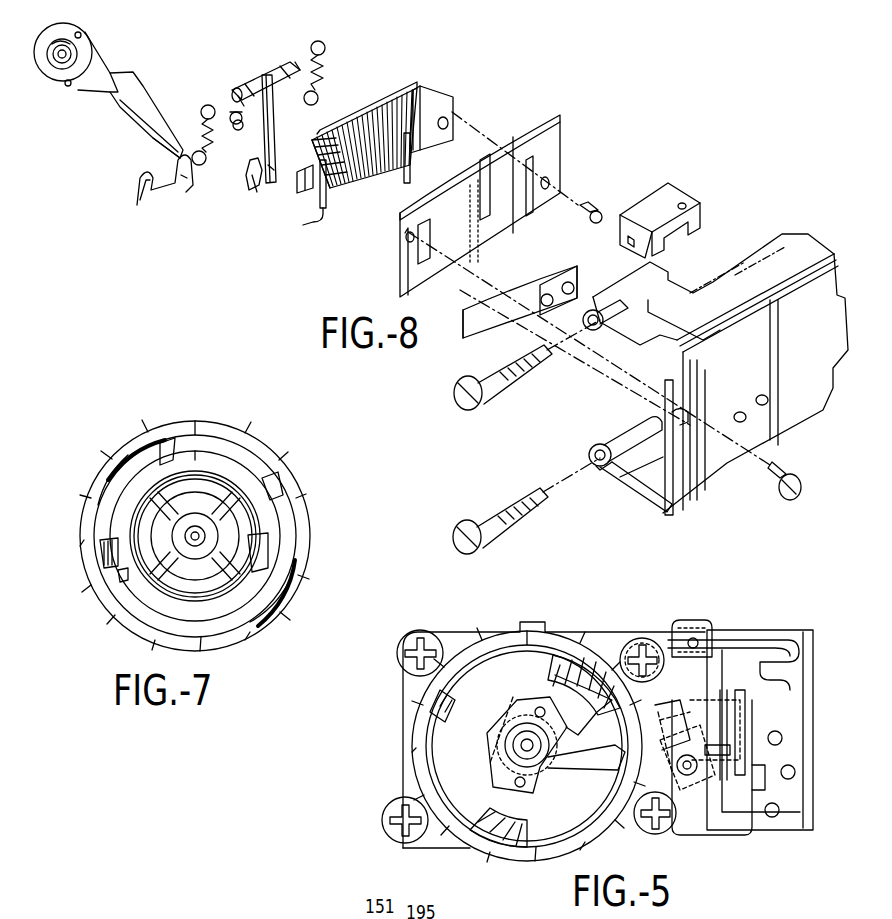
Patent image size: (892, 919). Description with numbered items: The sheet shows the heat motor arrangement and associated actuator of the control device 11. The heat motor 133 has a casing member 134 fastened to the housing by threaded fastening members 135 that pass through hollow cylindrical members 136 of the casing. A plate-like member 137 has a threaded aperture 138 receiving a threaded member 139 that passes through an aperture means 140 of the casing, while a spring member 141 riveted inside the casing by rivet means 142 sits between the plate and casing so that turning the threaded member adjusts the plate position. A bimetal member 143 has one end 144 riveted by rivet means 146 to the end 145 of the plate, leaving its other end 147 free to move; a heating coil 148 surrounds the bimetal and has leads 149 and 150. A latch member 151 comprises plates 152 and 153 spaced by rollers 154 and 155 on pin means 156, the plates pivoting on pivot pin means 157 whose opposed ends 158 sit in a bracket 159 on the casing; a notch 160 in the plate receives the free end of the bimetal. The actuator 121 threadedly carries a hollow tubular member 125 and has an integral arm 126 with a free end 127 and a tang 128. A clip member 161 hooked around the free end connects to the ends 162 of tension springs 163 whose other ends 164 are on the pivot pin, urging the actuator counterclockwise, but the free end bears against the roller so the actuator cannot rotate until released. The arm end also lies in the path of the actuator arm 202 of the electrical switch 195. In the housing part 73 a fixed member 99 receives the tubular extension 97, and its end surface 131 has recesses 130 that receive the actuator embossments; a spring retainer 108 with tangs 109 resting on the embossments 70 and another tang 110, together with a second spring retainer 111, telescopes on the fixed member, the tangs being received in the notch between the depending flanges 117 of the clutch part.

In FIG. 5, the control device 11 is at (400, 698).
In FIG. 5, the embossments 70 is at (565, 655).
In FIG. 7, the housing part 73 is at (203, 421).
In FIG. 5, the housing part 73 is at (490, 855).
In FIG. 7, the tubular extension 97 is at (175, 538).
In FIG. 7, the fixed member 99 is at (240, 548).
In FIG. 7, the spring retainer 108 is at (215, 470).
In FIG. 7, the tangs 109 is at (110, 480).
In FIG. 7, the tang 110 is at (278, 488).
In FIG. 7, the spring retainer 111 is at (140, 606).
In FIG. 7, the depending flanges 117 is at (243, 469).
In FIG. 5, the actuator 121 is at (525, 712).
In FIG. 8, the hollow tubular member 125 is at (65, 75).
In FIG. 8, the arm 126 is at (152, 129).
In FIG. 5, the arm 126 is at (612, 772).
In FIG. 8, the free end 127 is at (183, 154).
In FIG. 5, the free end 127 is at (683, 786).
In FIG. 5, the tang 128 is at (590, 688).
In FIG. 7, the recesses 130 is at (170, 520).
In FIG. 7, the end surface 131 is at (225, 525).
In FIG. 8, the heat motor 133 is at (550, 96).
In FIG. 5, the heat motor 133 is at (805, 626).
In FIG. 8, the casing member 134 is at (793, 283).
In FIG. 8, the threaded fastening members 135 is at (500, 392).
In FIG. 8, the hollow cylindrical members 136 is at (606, 326).
In FIG. 8, the plate-like member 137 is at (487, 167).
In FIG. 5, the plate-like member 137 is at (745, 727).
In FIG. 8, the threaded aperture 138 is at (406, 240).
In FIG. 8, the threaded member 139 is at (772, 481).
In FIG. 8, the aperture means 140 is at (684, 418).
In FIG. 8, the spring member 141 is at (503, 318).
In FIG. 8, the rivet means 142 is at (546, 294).
In FIG. 8, the bimetal member 143 is at (417, 110).
In FIG. 5, the bimetal member 143 is at (748, 772).
In FIG. 8, the end 144 is at (457, 116).
In FIG. 8, the end 145 is at (562, 148).
In FIG. 8, the rivet means 146 is at (595, 208).
In FIG. 8, the other end 147 is at (292, 180).
In FIG. 5, the other end 147 is at (730, 750).
In FIG. 8, the heating coil 148 is at (378, 105).
In FIG. 8, the lead 149 is at (404, 180).
In FIG. 8, the lead 150 is at (315, 225).
In FIG. 8, the latch member 151 is at (230, 198).
In FIG. 5, the latch member 151 is at (694, 630).
In FIG. 8, the plate 152 is at (257, 121).
In FIG. 8, the plate 153 is at (268, 98).
In FIG. 8, the roller 154 is at (262, 192).
In FIG. 5, the roller 154 is at (682, 791).
In FIG. 8, the roller 155 is at (228, 110).
In FIG. 8, the pin means 156 is at (236, 140).
In FIG. 8, the pivot pin means 157 is at (262, 62).
In FIG. 8, the opposed ends 158 is at (241, 100).
In FIG. 8, the bracket 159 is at (667, 203).
In FIG. 8, the notch 160 is at (276, 168).
In FIG. 8, the clip member 161 is at (160, 195).
In FIG. 8, the ends 162 is at (192, 188).
In FIG. 8, the tension springs 163 is at (200, 134).
In FIG. 8, the other ends 164 is at (200, 110).
In FIG. 5, the electrical switch 195 is at (728, 680).
In FIG. 5, the actuator arm 202 is at (695, 776).